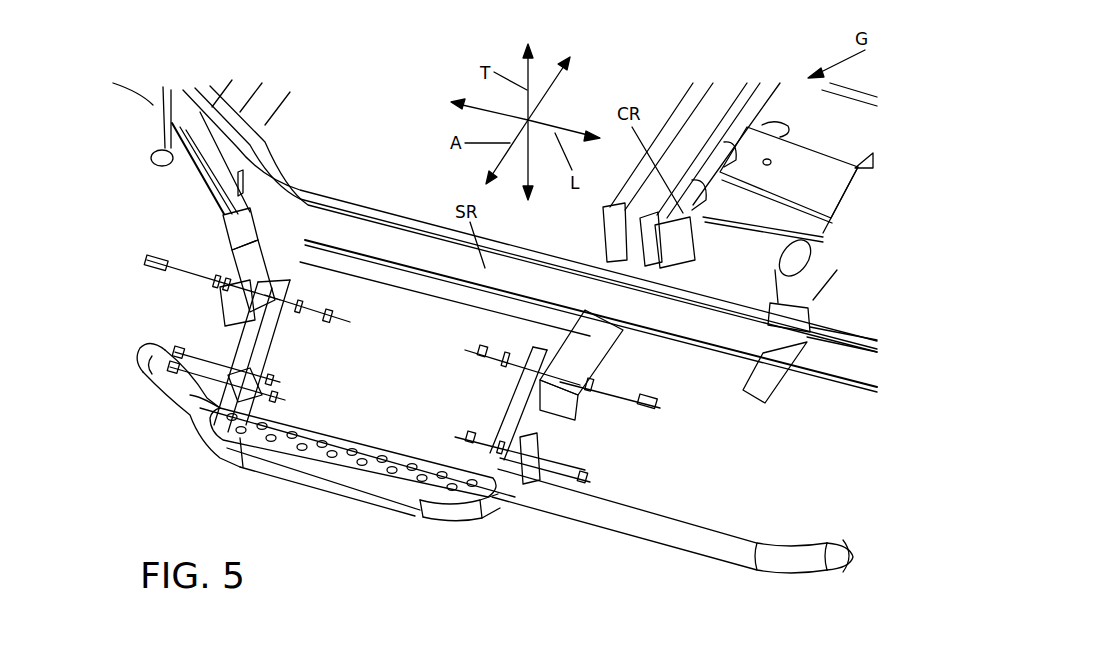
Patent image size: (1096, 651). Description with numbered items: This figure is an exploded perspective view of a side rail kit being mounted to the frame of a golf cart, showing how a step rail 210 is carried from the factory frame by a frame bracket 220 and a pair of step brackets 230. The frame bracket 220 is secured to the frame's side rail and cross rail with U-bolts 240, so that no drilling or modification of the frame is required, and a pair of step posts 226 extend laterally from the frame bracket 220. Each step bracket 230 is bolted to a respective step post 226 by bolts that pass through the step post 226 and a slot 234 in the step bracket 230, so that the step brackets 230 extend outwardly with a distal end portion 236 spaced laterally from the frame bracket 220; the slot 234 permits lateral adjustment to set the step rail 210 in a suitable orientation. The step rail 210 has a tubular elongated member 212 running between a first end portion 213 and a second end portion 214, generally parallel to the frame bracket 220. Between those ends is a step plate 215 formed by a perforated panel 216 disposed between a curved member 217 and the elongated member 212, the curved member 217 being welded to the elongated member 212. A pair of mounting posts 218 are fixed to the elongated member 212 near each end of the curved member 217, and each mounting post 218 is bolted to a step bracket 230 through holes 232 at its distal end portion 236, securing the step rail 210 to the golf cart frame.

The step rail 210 is at (786, 560).
The elongated member 212 is at (541, 500).
The first end portion 213 is at (131, 390).
The second end portion 214 is at (845, 580).
The step plate 215 is at (449, 520).
The perforated panel 216 is at (405, 472).
The curved member 217 is at (323, 482).
The mounting posts 218 is at (535, 457).
The frame bracket 220 is at (413, 285).
The step posts 226 is at (257, 278).
The step brackets 230 is at (277, 340).
The holes 232 is at (480, 443).
The slot 234 is at (515, 370).
The distal end portion 236 is at (242, 362).
The U-bolts 240 is at (170, 128).